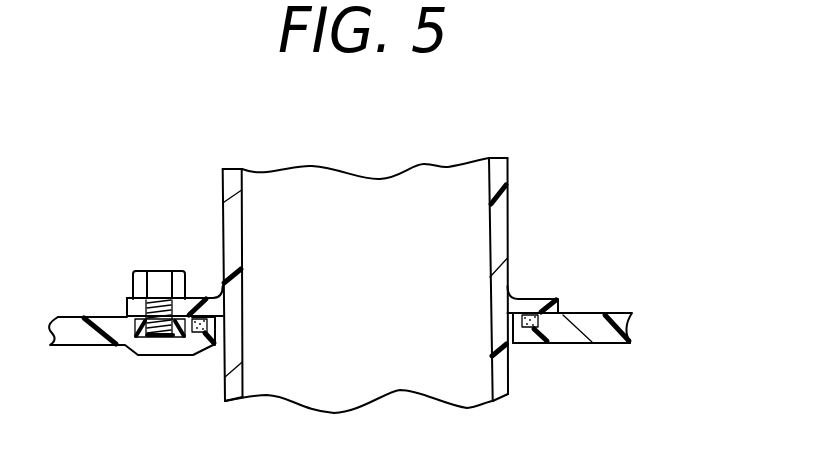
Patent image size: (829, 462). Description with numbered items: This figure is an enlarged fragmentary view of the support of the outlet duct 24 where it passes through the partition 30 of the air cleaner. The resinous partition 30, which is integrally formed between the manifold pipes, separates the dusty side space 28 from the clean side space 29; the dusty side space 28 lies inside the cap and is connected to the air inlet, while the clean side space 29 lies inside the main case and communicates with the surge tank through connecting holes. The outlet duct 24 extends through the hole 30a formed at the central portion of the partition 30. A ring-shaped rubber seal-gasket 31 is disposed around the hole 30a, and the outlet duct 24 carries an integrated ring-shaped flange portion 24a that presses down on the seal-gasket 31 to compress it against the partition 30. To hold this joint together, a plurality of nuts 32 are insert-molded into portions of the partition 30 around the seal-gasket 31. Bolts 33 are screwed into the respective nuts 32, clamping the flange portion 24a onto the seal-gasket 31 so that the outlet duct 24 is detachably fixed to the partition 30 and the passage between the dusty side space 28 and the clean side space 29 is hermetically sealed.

The outlet duct 24 is at (500, 168).
The ring-shaped flange portion 24a is at (528, 310).
The dusty side space 28 is at (565, 273).
The clean side space 29 is at (545, 355).
The partition 30 is at (597, 328).
The hole 30a is at (216, 345).
The seal-gasket 31 is at (204, 296).
The nut 32 is at (125, 343).
The bolt 33 is at (160, 278).